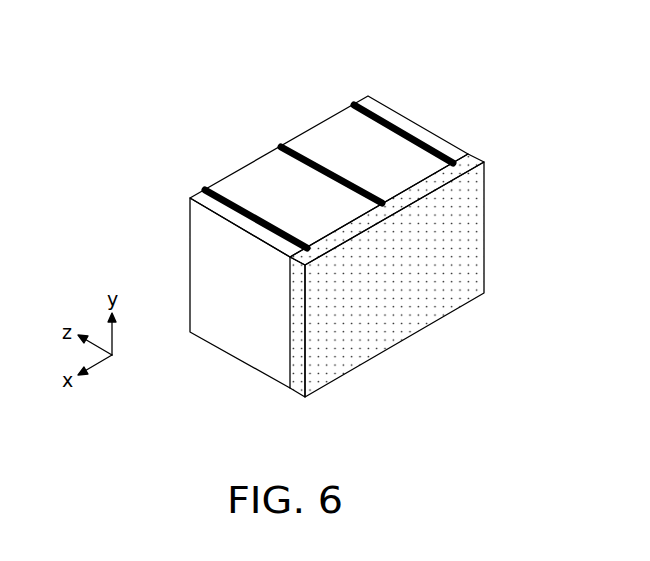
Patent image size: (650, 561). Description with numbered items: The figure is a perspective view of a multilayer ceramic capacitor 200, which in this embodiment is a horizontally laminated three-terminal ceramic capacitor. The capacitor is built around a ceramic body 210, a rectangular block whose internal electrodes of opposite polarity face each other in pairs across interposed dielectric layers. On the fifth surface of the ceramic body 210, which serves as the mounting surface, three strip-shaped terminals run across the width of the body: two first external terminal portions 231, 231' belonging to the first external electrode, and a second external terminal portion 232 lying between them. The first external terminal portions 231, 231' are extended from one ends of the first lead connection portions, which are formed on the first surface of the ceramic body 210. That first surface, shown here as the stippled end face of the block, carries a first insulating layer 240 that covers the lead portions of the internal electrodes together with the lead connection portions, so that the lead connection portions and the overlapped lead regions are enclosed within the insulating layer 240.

The multilayer ceramic capacitor 200 is at (160, 117).
The ceramic body 210 is at (202, 250).
The first external terminal portion 231 is at (256, 174).
The first external terminal portion 231' is at (400, 91).
The second external terminal portion 232 is at (292, 150).
The first insulating layer 240 is at (397, 320).